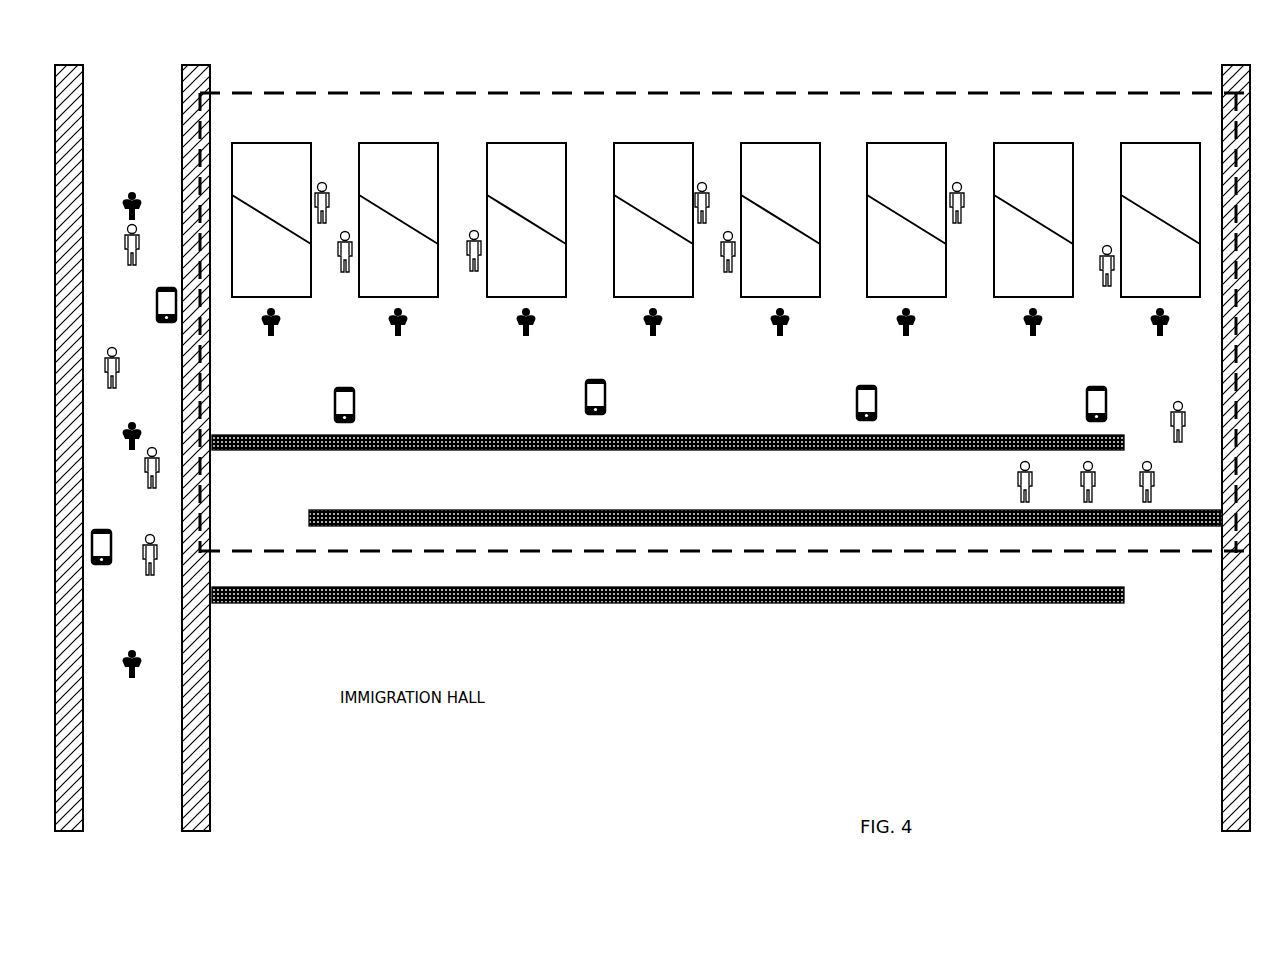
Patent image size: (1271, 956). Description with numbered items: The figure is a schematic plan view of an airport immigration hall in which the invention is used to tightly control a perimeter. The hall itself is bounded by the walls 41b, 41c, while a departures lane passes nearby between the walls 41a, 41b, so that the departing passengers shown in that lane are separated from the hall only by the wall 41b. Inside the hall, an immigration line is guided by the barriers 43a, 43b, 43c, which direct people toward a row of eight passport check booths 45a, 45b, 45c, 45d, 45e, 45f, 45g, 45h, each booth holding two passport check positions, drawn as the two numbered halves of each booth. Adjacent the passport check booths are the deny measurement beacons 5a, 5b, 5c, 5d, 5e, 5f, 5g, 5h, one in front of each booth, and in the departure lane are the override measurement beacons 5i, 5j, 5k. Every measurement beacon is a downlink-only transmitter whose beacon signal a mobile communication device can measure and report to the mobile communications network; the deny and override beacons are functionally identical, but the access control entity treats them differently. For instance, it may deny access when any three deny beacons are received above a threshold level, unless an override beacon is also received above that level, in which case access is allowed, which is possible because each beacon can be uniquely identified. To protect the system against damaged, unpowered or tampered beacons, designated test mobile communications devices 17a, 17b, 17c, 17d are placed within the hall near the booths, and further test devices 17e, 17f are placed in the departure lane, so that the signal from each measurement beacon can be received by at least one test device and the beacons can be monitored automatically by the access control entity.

The wall 41a is at (85, 757).
The wall 41b is at (207, 78).
The wall 41c is at (1235, 65).
The barrier 43a is at (692, 604).
The barrier 43b is at (792, 510).
The barrier 43c is at (748, 435).
The passport check booth 45a is at (268, 142).
The passport check booth 45b is at (395, 142).
The passport check booth 45c is at (523, 142).
The passport check booth 45d is at (650, 142).
The passport check booth 45e is at (777, 142).
The passport check booth 45f is at (903, 142).
The passport check booth 45g is at (1030, 142).
The passport check booth 45h is at (1157, 142).
The deny measurement beacon 5a is at (276, 338).
The deny measurement beacon 5b is at (403, 338).
The deny measurement beacon 5c is at (531, 338).
The deny measurement beacon 5d is at (658, 338).
The deny measurement beacon 5e is at (785, 338).
The deny measurement beacon 5f is at (911, 338).
The deny measurement beacon 5g is at (1038, 338).
The deny measurement beacon 5h is at (1165, 338).
The override measurement beacon 5i is at (138, 190).
The override measurement beacon 5j is at (138, 420).
The override measurement beacon 5k is at (140, 648).
The test mobile communications device 17a is at (334, 405).
The test mobile communications device 17b is at (585, 396).
The test mobile communications device 17c is at (857, 405).
The test mobile communications device 17d is at (1087, 405).
The test mobile communications device 17e is at (157, 300).
The test mobile communications device 17f is at (106, 564).